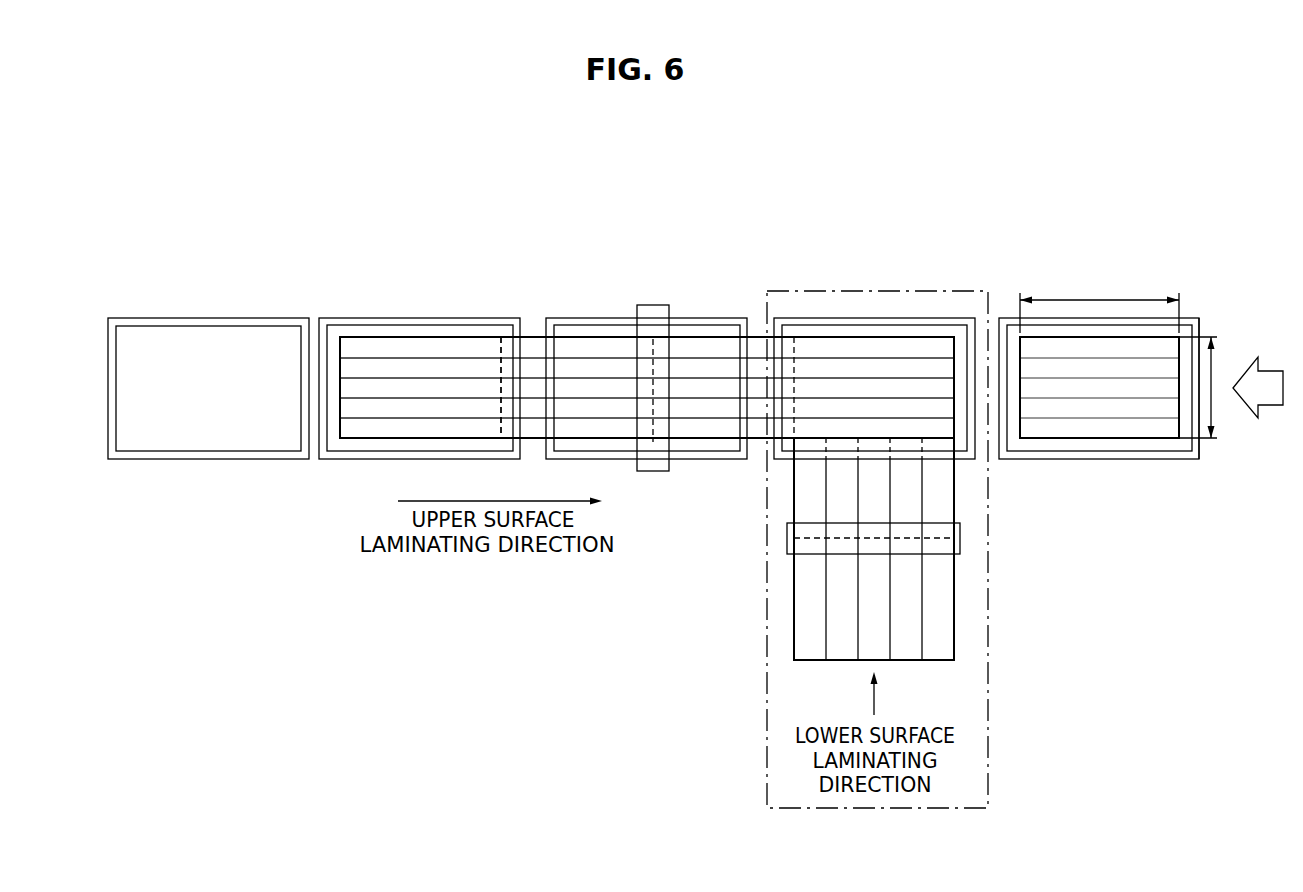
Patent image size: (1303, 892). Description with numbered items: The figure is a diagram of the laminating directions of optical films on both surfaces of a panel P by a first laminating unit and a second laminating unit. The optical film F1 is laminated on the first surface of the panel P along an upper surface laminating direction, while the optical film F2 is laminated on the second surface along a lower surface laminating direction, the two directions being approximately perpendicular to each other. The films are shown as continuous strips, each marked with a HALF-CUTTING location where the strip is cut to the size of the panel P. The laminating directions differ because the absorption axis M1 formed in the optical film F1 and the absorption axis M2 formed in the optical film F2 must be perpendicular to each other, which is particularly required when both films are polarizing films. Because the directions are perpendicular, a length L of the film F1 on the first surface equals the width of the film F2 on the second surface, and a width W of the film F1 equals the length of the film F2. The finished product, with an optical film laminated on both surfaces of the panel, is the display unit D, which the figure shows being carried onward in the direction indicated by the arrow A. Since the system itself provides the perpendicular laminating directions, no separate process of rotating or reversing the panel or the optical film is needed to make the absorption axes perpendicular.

The panel P is at (256, 317).
The optical film F1 is at (395, 348).
The absorption axis M1 is at (527, 353).
The optical film F2 is at (940, 606).
The absorption axis M2 is at (858, 623).
The half-cutting tool HALF-CUTTING is at (653, 305).
The length of the film L is at (1099, 303).
The width of the film W is at (1205, 387).
The direction A is at (1258, 387).
The display unit D is at (1196, 473).